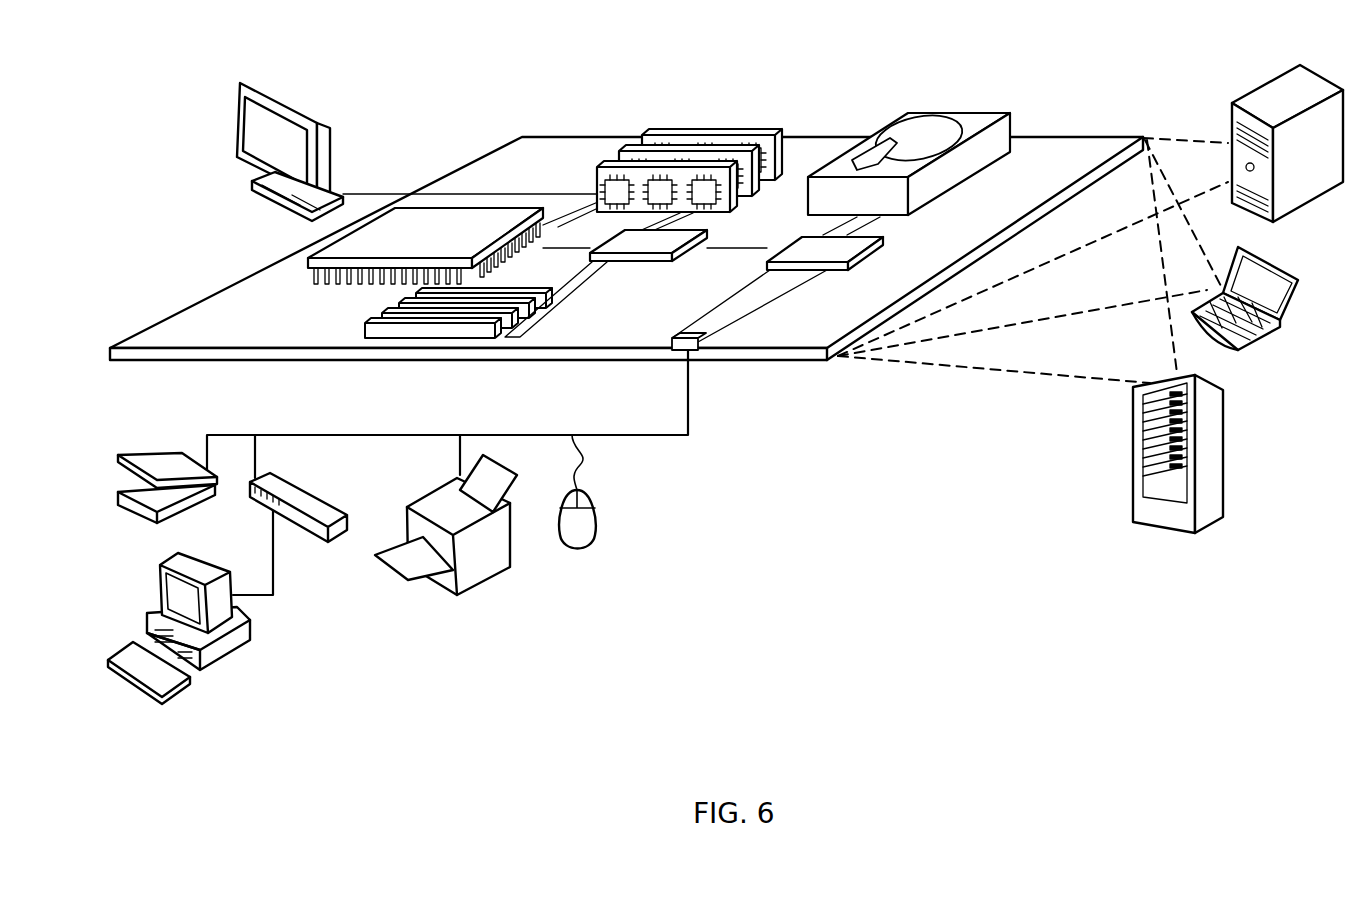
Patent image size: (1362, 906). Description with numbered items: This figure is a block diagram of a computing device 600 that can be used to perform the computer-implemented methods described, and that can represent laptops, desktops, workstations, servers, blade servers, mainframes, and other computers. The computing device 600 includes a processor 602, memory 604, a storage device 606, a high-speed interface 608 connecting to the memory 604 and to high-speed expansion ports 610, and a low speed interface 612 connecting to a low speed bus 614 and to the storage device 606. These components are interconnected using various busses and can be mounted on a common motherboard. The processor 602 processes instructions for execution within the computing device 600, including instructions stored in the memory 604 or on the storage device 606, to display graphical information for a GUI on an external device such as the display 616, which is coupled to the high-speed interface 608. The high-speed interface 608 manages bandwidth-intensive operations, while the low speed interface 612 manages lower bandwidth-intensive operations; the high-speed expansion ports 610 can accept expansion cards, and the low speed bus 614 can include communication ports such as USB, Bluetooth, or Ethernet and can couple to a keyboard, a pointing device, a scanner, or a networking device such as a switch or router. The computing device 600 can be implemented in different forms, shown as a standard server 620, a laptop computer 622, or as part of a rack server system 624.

The computing device 600 is at (443, 110).
The processor 602 is at (310, 260).
The memory 604 is at (663, 130).
The storage device 606 is at (897, 123).
The high-speed interface 608 is at (627, 243).
The high-speed expansion ports 610 is at (385, 318).
The low speed interface 612 is at (805, 243).
The low speed bus 614 is at (700, 350).
The display 616 is at (244, 82).
The standard server 620 is at (1230, 120).
The laptop computer 622 is at (1300, 272).
The rack server system 624 is at (1133, 478).